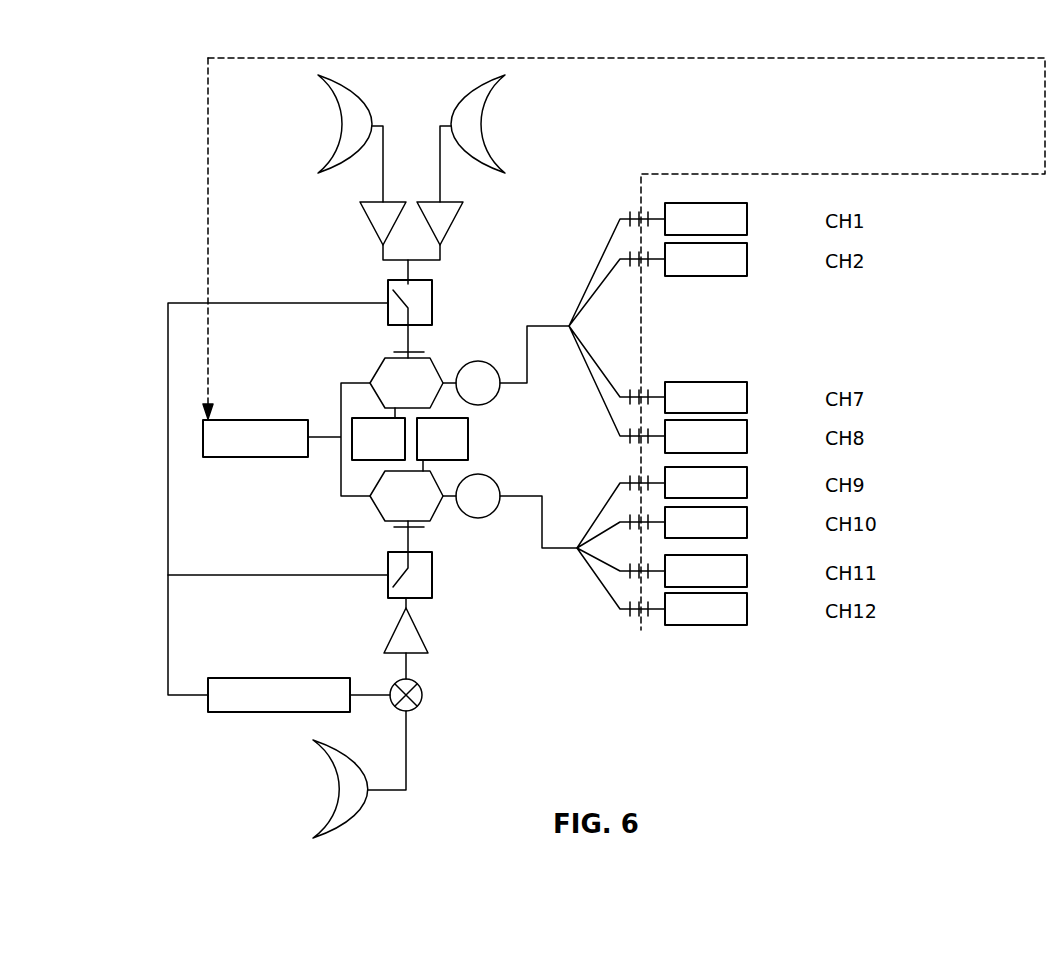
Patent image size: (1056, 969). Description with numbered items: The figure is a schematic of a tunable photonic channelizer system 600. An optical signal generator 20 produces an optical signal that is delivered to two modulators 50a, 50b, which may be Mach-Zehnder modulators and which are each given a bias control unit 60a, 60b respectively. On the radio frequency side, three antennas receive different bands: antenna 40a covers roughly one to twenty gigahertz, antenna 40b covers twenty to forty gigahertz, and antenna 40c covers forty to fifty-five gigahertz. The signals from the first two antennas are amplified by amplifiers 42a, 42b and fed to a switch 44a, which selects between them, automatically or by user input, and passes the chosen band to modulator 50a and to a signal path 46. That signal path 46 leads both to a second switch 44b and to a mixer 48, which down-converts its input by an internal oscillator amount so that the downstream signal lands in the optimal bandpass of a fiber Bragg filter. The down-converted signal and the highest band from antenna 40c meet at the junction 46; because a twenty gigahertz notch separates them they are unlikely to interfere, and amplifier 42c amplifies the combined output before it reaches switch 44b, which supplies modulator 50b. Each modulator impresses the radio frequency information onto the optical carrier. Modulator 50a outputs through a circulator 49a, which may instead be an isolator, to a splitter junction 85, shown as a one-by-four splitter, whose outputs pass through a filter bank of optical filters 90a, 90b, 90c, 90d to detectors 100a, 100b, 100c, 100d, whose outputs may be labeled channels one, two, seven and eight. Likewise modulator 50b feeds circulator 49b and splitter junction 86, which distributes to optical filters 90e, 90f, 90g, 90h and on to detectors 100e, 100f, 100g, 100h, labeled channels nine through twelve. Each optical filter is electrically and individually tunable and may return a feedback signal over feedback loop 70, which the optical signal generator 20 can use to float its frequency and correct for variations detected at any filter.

The optical signal generator 20 is at (247, 418).
The antenna 40a is at (342, 115).
The antenna 40b is at (481, 115).
The antenna 40c is at (337, 780).
The amplifier 42a is at (372, 220).
The amplifier 42b is at (450, 220).
The amplifier 42c is at (418, 633).
The switch 44a is at (432, 295).
The switch 44b is at (432, 575).
The signal path / junction 46 is at (168, 343).
The mixer 48 is at (292, 677).
The circulator 49a is at (478, 361).
The circulator 49b is at (480, 518).
The modulator 50a is at (386, 360).
The modulator 50b is at (376, 508).
The bias control unit 60a is at (363, 418).
The bias control unit 60b is at (470, 428).
The feedback loop 70 is at (705, 57).
The splitter junction 85 is at (578, 326).
The splitter junction 86 is at (577, 546).
The optical filter 90a is at (637, 206).
The optical filter 90b is at (637, 245).
The optical filter 90c is at (648, 381).
The optical filter 90d is at (637, 428).
The optical filter 90e is at (637, 472).
The optical filter 90f is at (637, 508).
The optical filter 90g is at (637, 582).
The optical filter 90h is at (641, 622).
The detector 100a is at (747, 208).
The detector 100b is at (747, 248).
The detector 100c is at (747, 387).
The detector 100d is at (747, 425).
The detector 100e is at (747, 472).
The detector 100f is at (747, 512).
The detector 100g is at (747, 560).
The detector 100h is at (747, 598).
The tunable photonic channelizer system 600 is at (868, 729).